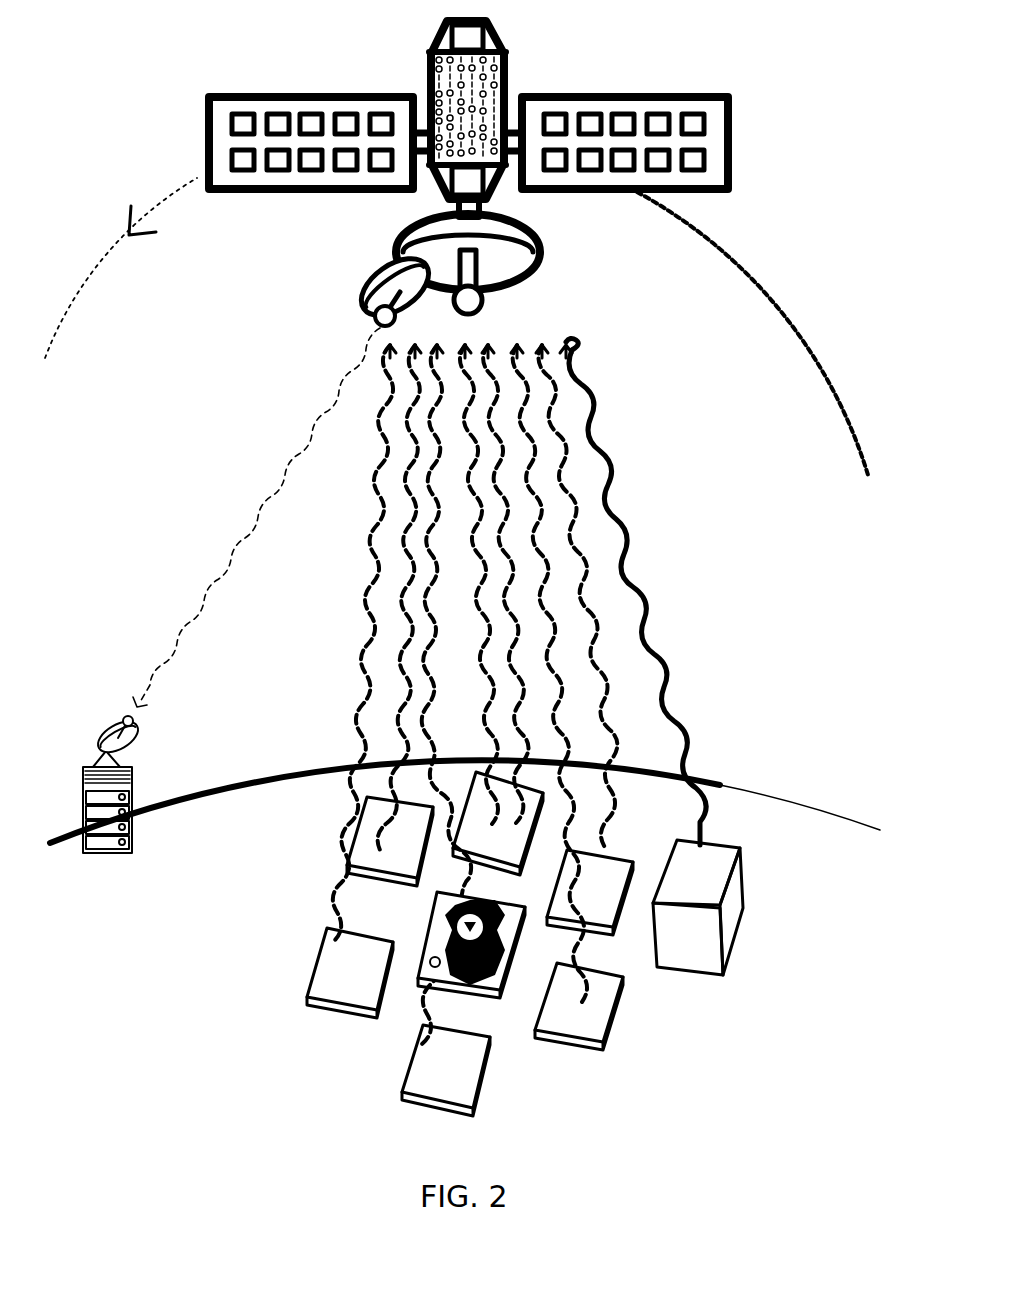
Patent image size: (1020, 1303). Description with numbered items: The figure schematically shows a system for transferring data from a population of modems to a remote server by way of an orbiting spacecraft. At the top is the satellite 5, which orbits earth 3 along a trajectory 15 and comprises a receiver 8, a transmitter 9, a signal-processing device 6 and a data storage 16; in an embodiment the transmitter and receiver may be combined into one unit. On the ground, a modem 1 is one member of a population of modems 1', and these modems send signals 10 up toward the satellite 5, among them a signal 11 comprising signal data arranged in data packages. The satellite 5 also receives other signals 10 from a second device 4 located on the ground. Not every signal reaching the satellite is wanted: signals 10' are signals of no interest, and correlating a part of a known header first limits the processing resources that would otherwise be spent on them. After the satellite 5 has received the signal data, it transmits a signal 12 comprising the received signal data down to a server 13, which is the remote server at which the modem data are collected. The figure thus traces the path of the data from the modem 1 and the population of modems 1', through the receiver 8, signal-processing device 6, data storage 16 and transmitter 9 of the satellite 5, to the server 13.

The modem 1 is at (480, 945).
The population of modems 1' is at (421, 944).
The earth 3 is at (465, 923).
The second device 4 is at (745, 882).
The satellite 5 is at (335, 93).
The signal-processing device 6 is at (500, 47).
The receiver 8 is at (480, 207).
The transmitter 9 is at (360, 264).
The signals 10 is at (444, 694).
The signals of no interest 10' is at (656, 591).
The signal 11 is at (470, 341).
The signal 12 is at (240, 540).
The server 13 is at (130, 787).
The trajectory 15 is at (755, 282).
The data storage 16 is at (460, 40).